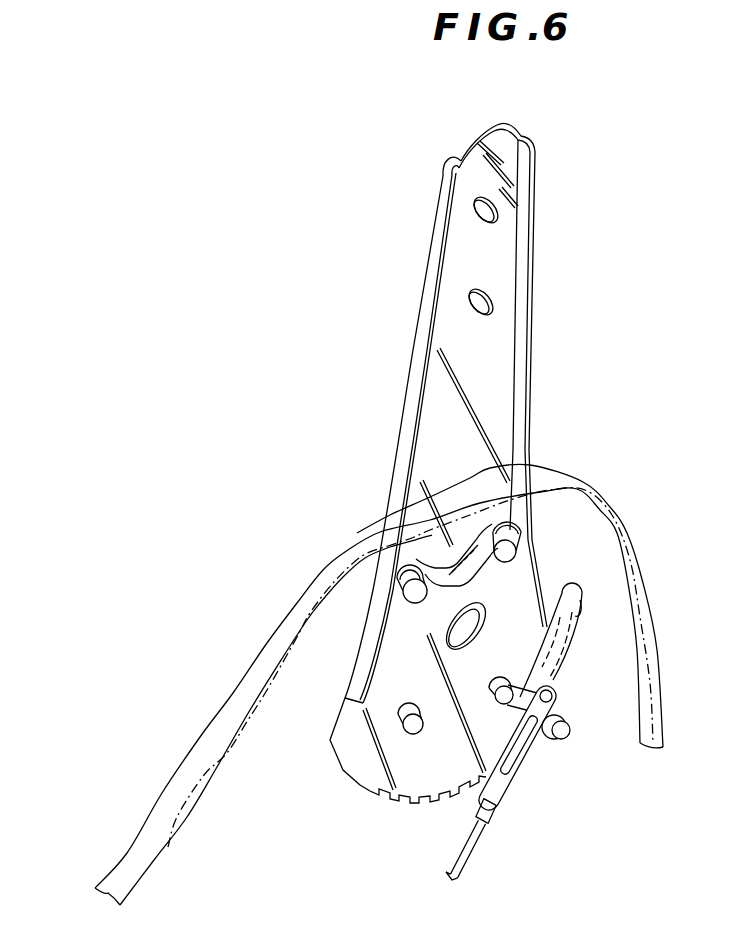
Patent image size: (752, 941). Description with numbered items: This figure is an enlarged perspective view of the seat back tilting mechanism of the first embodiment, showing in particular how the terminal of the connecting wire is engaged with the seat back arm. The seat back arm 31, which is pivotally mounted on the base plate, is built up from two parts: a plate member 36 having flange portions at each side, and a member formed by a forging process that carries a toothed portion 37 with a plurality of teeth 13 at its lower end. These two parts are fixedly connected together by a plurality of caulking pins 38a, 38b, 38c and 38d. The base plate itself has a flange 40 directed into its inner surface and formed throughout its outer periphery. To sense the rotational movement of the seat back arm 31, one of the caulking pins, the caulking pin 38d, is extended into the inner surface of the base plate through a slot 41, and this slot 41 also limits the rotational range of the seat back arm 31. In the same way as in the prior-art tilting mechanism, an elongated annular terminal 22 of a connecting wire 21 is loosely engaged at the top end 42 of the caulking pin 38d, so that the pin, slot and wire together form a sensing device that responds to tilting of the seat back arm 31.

The teeth 13 is at (375, 792).
The connecting wire 21 is at (467, 852).
The elongated annular terminal 22 is at (507, 785).
The seat back arm 31 is at (545, 245).
The plate member 36 is at (500, 373).
The toothed portion 37 is at (352, 767).
The caulking pin 38a is at (513, 549).
The caulking pin 38b is at (416, 604).
The caulking pin 38c is at (403, 727).
The caulking pin 38d is at (503, 681).
The flange 40 is at (345, 558).
The slot 41 is at (579, 613).
The top end 42 is at (563, 740).